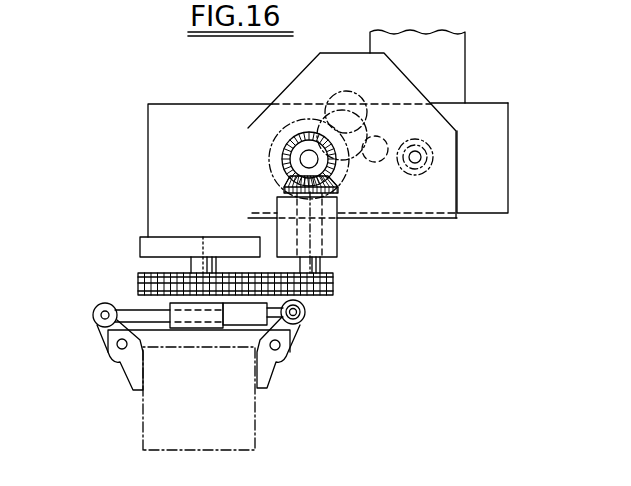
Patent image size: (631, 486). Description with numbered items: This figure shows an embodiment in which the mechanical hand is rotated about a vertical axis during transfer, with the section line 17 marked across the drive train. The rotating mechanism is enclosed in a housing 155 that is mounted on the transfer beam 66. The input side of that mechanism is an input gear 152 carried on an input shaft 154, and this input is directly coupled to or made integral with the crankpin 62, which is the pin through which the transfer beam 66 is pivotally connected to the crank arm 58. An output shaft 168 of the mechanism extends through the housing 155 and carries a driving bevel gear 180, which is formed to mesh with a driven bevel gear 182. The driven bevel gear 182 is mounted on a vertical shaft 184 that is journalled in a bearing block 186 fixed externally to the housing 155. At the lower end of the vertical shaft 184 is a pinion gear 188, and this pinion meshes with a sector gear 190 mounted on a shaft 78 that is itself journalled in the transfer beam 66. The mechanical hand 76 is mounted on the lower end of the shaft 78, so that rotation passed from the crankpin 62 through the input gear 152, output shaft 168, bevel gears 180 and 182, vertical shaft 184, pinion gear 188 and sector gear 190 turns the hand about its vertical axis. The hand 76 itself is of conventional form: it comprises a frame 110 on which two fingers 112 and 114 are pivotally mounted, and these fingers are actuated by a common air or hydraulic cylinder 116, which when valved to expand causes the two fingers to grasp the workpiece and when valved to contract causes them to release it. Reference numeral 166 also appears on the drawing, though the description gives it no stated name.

The section line 17- 17 is at (400, 270).
The crank arm 58 is at (460, 67).
The crankpin 62 is at (438, 155).
The transfer beam 66 is at (487, 103).
The mechanical hand 76 is at (93, 324).
The shaft 78 is at (193, 267).
The frame 110 is at (283, 360).
The finger 112 is at (266, 383).
The finger 114 is at (130, 386).
The air or hydraulic cylinder 116 is at (278, 317).
The input gear 152 is at (425, 170).
The input shaft 154 is at (416, 157).
The housing 155 is at (340, 55).
The motor housing 166 is at (280, 140).
The output shaft 168 is at (310, 160).
The driving bevel gear 180 is at (296, 140).
The driven bevel gear 182 is at (285, 183).
The vertical shaft 184 is at (322, 265).
The bearing block 186 is at (338, 235).
The pinion gear 188 is at (328, 297).
The sector gear 190 is at (137, 289).